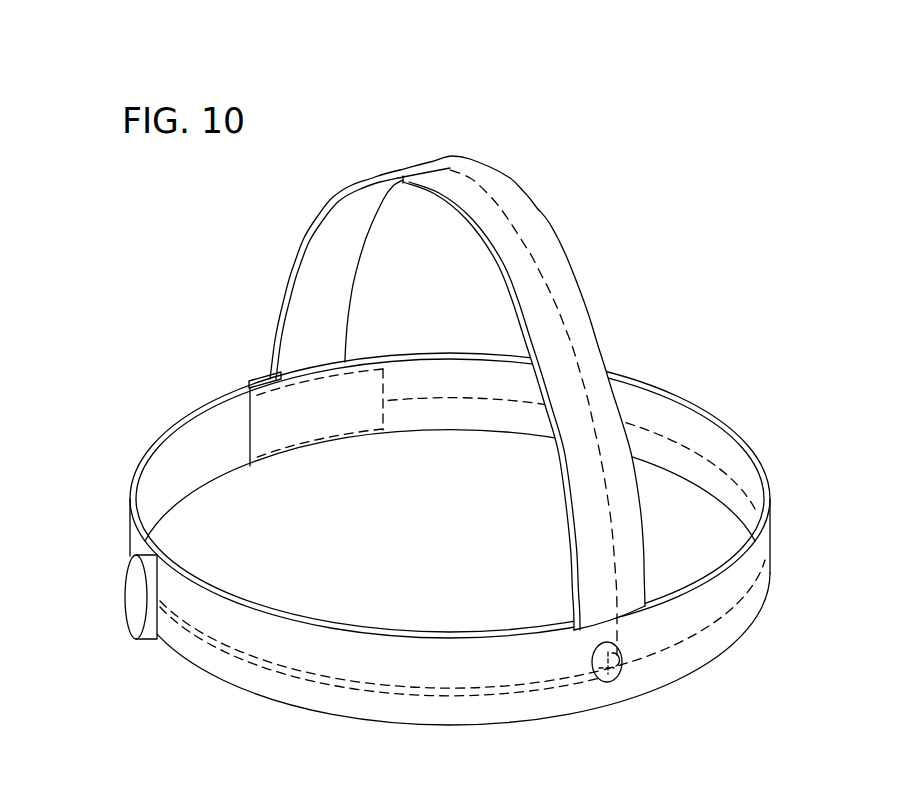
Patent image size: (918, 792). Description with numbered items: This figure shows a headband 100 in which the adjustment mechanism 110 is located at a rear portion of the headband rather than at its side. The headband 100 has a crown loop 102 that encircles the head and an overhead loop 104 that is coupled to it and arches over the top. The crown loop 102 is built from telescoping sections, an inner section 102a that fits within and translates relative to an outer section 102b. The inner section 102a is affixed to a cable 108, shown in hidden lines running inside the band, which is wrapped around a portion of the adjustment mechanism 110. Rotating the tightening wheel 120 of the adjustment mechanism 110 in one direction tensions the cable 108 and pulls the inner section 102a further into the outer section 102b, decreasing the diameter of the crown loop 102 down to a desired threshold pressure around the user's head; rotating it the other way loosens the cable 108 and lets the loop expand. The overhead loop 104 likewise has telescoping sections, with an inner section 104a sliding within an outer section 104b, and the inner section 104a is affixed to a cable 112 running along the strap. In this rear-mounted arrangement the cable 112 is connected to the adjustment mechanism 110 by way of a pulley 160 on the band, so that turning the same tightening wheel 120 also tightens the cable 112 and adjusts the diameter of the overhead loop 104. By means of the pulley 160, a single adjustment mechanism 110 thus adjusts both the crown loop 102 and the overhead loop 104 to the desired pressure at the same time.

The headband 100 is at (406, 452).
The crown loop 102 is at (439, 550).
The inner section of crown loop 102a is at (424, 524).
The outer section of crown loop 102b is at (450, 660).
The overhead loop 104 is at (440, 405).
The inner section of overhead loop 104a is at (290, 268).
The outer section of overhead loop 104b is at (592, 316).
The cable 108 is at (466, 403).
The adjustment mechanism 110 is at (84, 611).
The cable 112 is at (544, 279).
The tightening wheel 120 is at (98, 597).
The pulley 160 is at (608, 683).